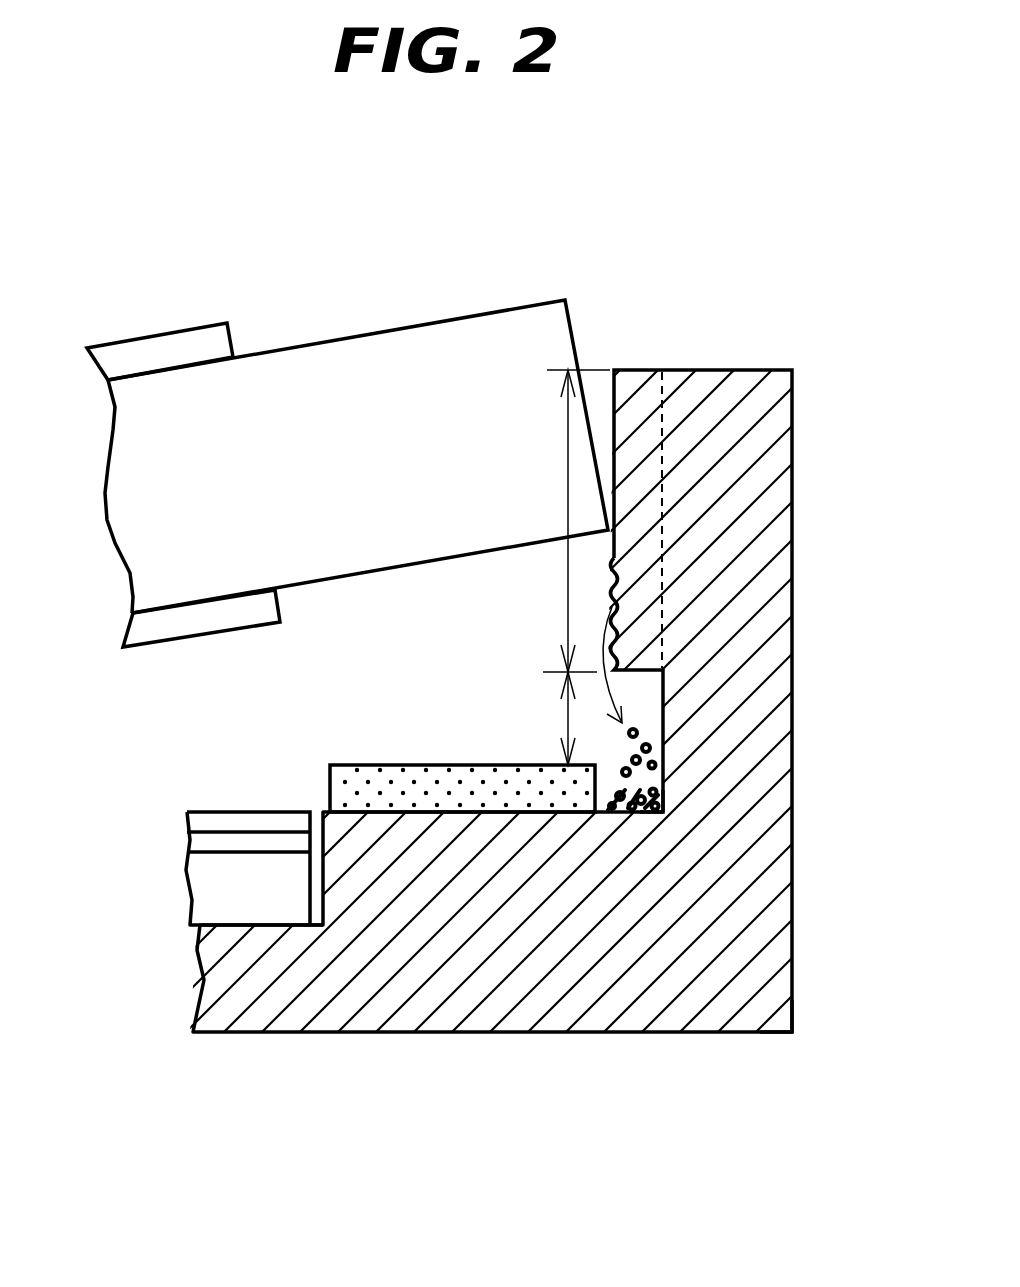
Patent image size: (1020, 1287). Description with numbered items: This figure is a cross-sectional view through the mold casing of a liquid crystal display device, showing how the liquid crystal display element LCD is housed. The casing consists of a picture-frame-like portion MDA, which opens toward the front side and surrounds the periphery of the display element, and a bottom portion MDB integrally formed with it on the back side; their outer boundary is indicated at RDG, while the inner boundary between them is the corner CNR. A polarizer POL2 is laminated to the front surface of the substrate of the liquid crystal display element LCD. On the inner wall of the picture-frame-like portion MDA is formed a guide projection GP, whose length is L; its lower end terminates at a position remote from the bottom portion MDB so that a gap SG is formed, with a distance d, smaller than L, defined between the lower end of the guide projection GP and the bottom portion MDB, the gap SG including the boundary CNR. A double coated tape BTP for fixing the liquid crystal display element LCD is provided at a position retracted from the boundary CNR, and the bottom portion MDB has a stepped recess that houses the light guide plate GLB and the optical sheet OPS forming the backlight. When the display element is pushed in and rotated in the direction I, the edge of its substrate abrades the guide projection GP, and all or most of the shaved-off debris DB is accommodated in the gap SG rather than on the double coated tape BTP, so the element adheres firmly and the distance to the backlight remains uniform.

The direction of rotation I is at (558, 282).
The liquid crystal display element LCD is at (160, 532).
The polarizer POL2 is at (165, 348).
The picture-frame-like portion MDA is at (718, 382).
The bottom portion MDB is at (303, 1013).
The guide projection GP is at (528, 567).
The length of the guide projection L is at (567, 597).
The distance d is at (552, 718).
The double coated tape BTP is at (363, 770).
The optical sheet OPS is at (182, 813).
The light guide plate GLB is at (193, 882).
The gap SG is at (648, 700).
The shaved-off debris DB is at (640, 730).
The boundary CNR is at (660, 808).
The outer boundary RDG is at (803, 1028).